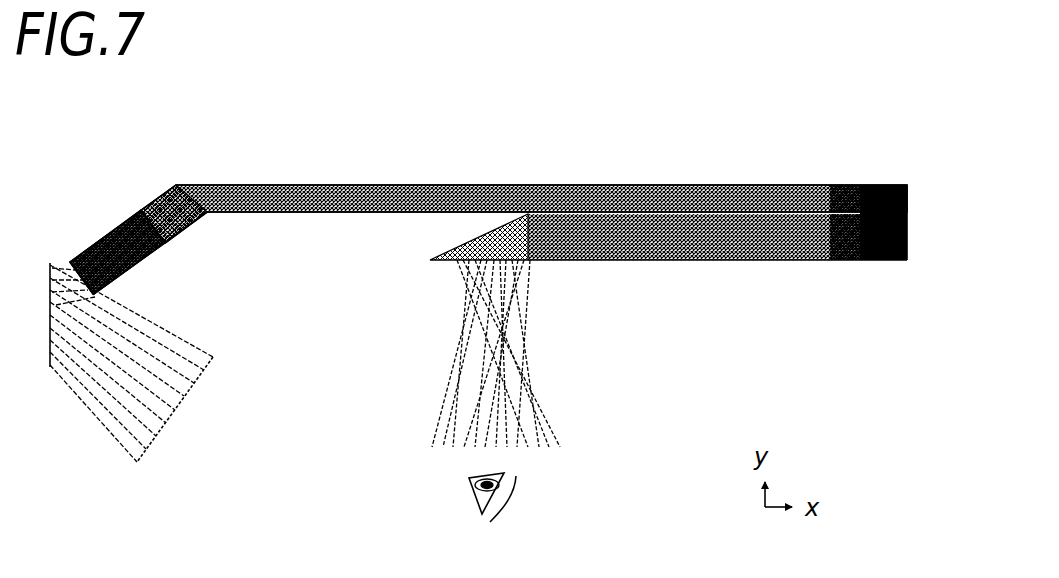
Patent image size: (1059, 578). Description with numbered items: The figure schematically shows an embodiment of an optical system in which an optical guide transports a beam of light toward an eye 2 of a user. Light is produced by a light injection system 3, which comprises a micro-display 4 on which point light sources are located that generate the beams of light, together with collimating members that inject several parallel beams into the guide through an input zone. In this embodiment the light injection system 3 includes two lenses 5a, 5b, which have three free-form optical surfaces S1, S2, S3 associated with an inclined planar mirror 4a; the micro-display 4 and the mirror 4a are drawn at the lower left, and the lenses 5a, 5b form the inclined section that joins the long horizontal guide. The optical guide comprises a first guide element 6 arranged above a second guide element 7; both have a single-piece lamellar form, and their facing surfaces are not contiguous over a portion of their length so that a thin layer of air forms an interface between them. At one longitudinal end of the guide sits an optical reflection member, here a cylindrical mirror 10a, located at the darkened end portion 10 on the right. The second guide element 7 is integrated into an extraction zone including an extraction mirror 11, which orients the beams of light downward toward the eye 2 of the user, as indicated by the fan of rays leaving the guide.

The eye 2 is at (524, 500).
The light injection system 3 is at (70, 192).
The micro-display 4 is at (176, 416).
The inclined planar mirror 4a is at (50, 338).
The lens 5a is at (128, 277).
The lens 5b is at (170, 196).
The first guide element 6 is at (270, 220).
The second guide element 7 is at (625, 265).
The end portion 10 is at (889, 170).
The cylindrical mirror 10a is at (907, 248).
The extraction mirror 11 is at (468, 243).
The free-form optical surface S1 is at (68, 263).
The free-form optical surface S2 is at (166, 250).
The free-form optical surface S3 is at (145, 205).